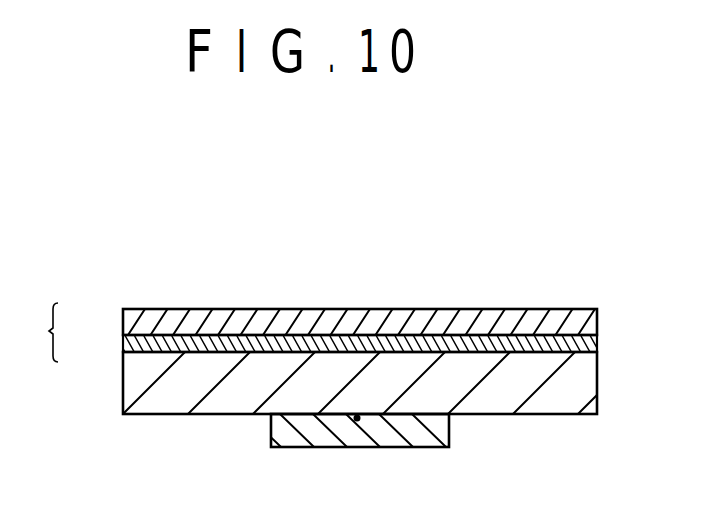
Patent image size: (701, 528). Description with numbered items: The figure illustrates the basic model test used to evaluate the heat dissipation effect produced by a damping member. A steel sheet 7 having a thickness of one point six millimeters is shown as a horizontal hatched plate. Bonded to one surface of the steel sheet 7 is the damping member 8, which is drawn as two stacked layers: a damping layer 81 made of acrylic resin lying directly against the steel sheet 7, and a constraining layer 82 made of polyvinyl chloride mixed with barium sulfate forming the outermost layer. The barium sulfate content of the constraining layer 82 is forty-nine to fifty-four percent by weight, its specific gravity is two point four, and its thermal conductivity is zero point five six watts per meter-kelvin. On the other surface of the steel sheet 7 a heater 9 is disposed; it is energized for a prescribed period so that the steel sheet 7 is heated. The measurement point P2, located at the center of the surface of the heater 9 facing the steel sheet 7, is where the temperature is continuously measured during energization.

The steel sheet 7 is at (129, 385).
The damping member 8 is at (44, 332).
The damping layer 81 is at (126, 349).
The constraining layer 82 is at (126, 325).
The heater 9 is at (278, 434).
The measurement point P2 is at (357, 420).